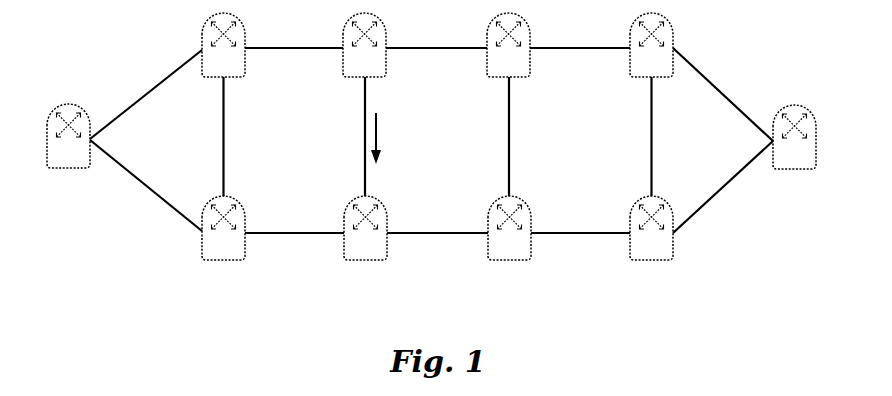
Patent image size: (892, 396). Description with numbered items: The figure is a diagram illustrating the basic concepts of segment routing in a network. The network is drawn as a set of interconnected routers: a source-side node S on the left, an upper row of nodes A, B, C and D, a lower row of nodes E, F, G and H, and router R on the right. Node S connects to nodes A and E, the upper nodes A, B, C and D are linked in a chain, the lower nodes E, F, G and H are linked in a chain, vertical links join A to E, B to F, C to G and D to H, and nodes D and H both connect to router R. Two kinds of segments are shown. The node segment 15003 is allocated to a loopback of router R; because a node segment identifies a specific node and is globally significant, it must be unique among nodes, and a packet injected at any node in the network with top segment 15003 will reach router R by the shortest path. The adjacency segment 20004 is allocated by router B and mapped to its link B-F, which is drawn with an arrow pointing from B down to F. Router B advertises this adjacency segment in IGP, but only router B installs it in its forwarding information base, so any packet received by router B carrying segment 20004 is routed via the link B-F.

The node segment 15003 is at (798, 151).
The adjacency segment 20004 is at (409, 138).
The node S is at (68, 136).
The node A is at (223, 45).
The router B is at (364, 45).
The node C is at (508, 45).
The node D is at (651, 45).
The node E is at (223, 228).
The node F is at (365, 228).
The node G is at (509, 228).
The node H is at (651, 228).